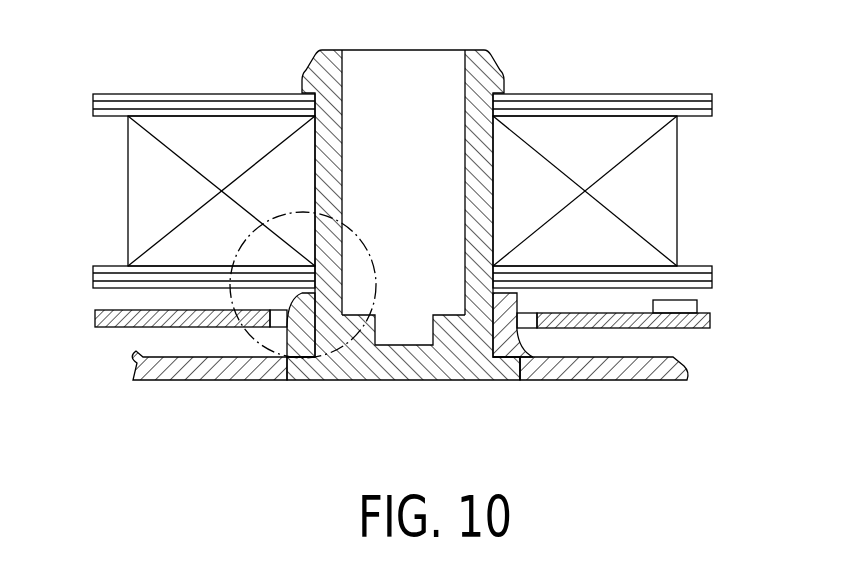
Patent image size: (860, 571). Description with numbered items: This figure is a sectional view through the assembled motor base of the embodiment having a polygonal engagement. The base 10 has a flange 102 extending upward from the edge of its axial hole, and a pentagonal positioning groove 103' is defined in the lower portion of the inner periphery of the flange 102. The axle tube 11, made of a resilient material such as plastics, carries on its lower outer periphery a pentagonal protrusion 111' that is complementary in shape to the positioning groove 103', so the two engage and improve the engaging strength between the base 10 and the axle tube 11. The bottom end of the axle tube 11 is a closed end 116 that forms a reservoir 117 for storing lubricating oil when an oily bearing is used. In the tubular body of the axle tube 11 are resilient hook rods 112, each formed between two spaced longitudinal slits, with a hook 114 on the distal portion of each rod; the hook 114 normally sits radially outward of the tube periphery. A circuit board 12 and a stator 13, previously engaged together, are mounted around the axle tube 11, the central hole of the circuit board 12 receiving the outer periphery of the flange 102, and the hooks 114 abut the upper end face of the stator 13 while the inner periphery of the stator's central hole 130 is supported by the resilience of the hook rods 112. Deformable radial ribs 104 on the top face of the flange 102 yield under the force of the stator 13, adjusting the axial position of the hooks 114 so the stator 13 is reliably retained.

The base 10 is at (645, 372).
The axle tube 11 is at (473, 80).
The circuit board 12 is at (680, 328).
The stator 13 is at (648, 193).
The flange 102 is at (297, 355).
The ribs 104 is at (298, 296).
The resilient hook rod 112 is at (330, 155).
The hook 114 is at (310, 77).
The closed end 116 is at (433, 365).
The reservoir 117 is at (405, 335).
The central hole 130 is at (492, 155).
The pentagonal protrusion 111' is at (509, 404).
The pentagonal positioning groove 103' is at (539, 372).